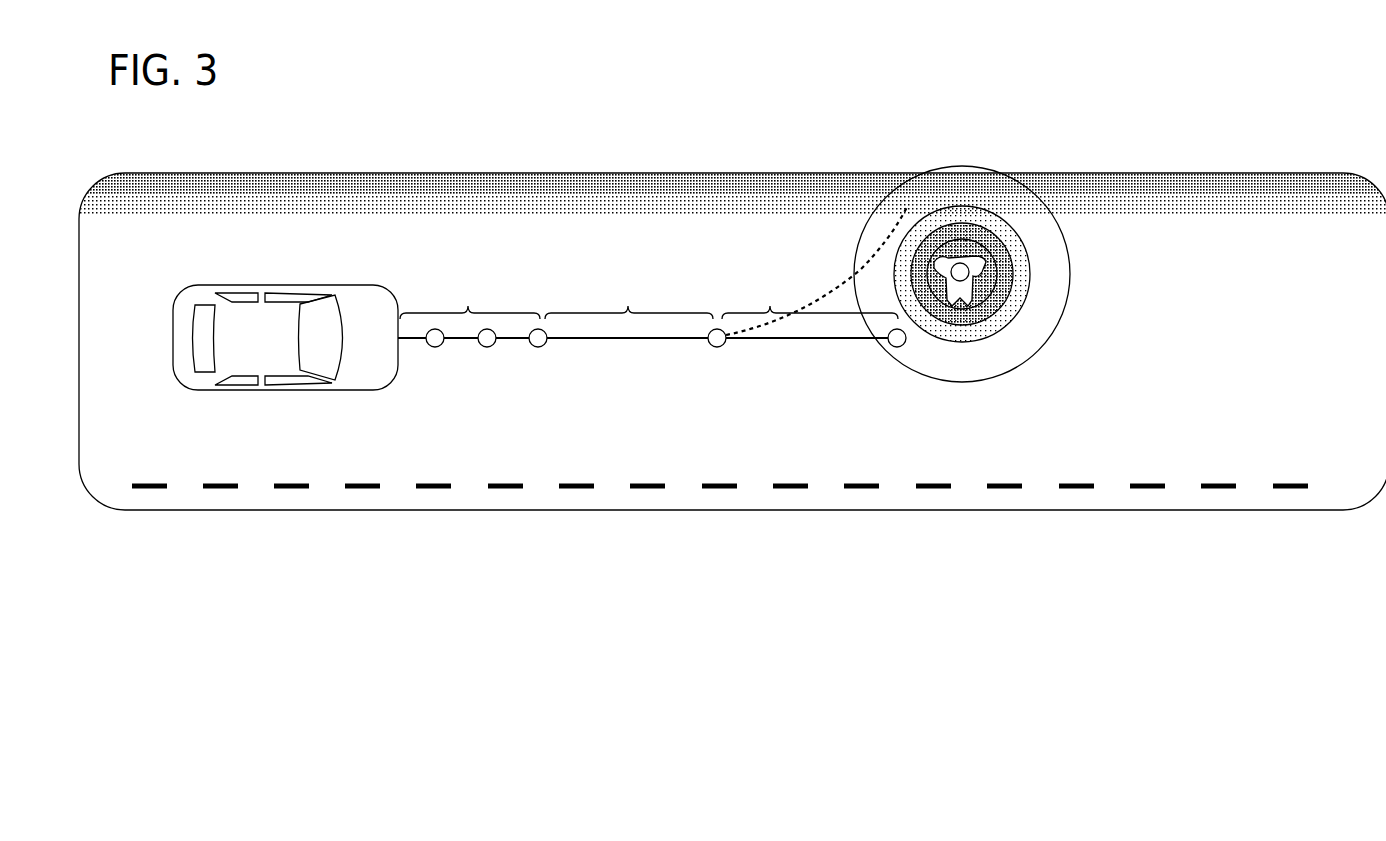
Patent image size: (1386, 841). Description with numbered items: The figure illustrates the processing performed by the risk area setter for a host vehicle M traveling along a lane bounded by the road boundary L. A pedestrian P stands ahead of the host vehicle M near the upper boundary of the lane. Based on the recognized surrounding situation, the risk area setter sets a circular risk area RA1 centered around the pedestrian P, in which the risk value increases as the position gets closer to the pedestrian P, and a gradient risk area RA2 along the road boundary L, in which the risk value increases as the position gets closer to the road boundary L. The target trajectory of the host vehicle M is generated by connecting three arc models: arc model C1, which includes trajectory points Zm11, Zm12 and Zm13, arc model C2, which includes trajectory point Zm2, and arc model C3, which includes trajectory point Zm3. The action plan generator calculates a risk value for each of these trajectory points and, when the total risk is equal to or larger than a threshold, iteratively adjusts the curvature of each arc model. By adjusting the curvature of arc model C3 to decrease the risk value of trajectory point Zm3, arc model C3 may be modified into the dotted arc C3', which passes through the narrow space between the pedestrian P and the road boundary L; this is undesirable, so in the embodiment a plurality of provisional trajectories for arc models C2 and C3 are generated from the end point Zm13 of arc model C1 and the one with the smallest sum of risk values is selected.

The host vehicle M is at (285, 285).
The road boundary L is at (733, 172).
The risk area RA2 is at (1299, 185).
The risk area RA1 is at (1070, 272).
The pedestrian P is at (1005, 288).
The modified arc model C3' is at (816, 221).
The arc model C1 is at (470, 286).
The arc model C2 is at (629, 286).
The arc model C3 is at (807, 286).
The trajectory point Zm11 is at (435, 357).
The trajectory point Zm12 is at (487, 357).
The trajectory point Zm13 is at (539, 357).
The trajectory point Zm2 is at (720, 357).
The trajectory point Zm3 is at (901, 357).